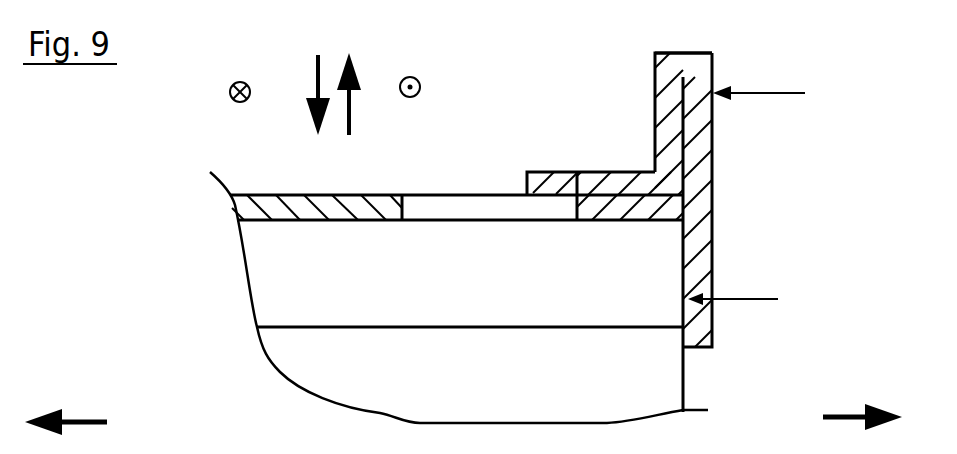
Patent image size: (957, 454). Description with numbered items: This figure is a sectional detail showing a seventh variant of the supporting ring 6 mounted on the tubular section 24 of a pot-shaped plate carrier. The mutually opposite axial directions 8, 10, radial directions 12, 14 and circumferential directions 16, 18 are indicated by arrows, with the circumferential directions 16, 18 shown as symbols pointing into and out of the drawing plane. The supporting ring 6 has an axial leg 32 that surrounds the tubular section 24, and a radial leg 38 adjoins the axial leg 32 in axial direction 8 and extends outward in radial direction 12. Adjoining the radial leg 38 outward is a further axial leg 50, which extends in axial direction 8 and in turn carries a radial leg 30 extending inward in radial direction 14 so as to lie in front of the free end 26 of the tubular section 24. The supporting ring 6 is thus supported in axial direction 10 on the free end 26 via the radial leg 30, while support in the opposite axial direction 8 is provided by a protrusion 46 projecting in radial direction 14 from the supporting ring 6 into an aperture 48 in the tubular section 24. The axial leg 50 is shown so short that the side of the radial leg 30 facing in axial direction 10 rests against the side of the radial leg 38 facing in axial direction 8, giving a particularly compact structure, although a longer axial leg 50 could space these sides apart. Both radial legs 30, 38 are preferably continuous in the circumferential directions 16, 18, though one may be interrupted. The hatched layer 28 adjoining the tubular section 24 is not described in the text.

The supporting ring 6 is at (768, 95).
The axial direction 8 is at (845, 412).
The axial direction 10 is at (87, 418).
The radial direction 12 is at (350, 110).
The radial direction 14 is at (312, 68).
The circumferential direction 16 is at (423, 84).
The circumferential direction 18 is at (227, 89).
The tubular section 24 is at (267, 208).
The free end 26 is at (749, 305).
The hatched layer portion 28 is at (362, 192).
The radial leg 30 is at (700, 207).
The axial leg 32 is at (637, 182).
The radial leg 38 is at (672, 120).
The protrusion 46 is at (570, 203).
The aperture 48 is at (455, 210).
The axial leg 50 is at (682, 62).